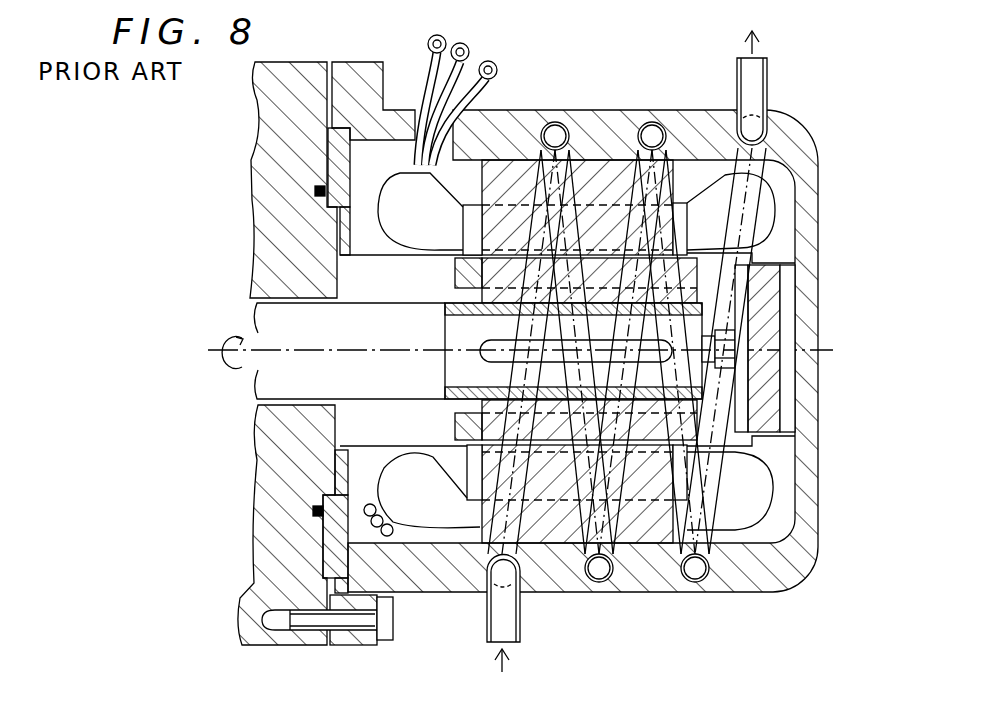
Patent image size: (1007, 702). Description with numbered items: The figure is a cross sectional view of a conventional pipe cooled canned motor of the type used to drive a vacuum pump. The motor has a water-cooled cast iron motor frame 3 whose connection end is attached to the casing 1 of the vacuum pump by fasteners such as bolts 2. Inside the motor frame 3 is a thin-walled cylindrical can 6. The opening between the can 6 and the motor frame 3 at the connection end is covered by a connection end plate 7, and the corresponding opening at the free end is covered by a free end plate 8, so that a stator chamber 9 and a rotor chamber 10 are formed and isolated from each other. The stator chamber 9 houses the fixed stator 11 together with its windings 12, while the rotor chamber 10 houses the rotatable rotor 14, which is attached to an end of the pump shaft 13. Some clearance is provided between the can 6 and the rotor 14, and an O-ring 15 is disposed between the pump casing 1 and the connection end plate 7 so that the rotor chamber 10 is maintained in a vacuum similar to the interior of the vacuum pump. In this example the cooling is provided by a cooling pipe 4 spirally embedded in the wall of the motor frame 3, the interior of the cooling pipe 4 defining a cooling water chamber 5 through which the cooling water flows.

The casing 1 is at (268, 112).
The bolts 2 is at (363, 622).
The motor frame 3 is at (790, 130).
The cooling pipe 4 is at (520, 608).
The cooling water chamber 5 is at (556, 121).
The can 6 is at (417, 256).
The connection end plate 7 is at (318, 190).
The free end plate 8 is at (772, 302).
The stator chamber 9 is at (796, 178).
The rotor chamber 10 is at (738, 405).
The stator 11 is at (612, 162).
The windings 12 is at (765, 212).
The pump shaft 13 is at (258, 390).
The rotor 14 is at (657, 575).
The O-ring 15 is at (314, 511).